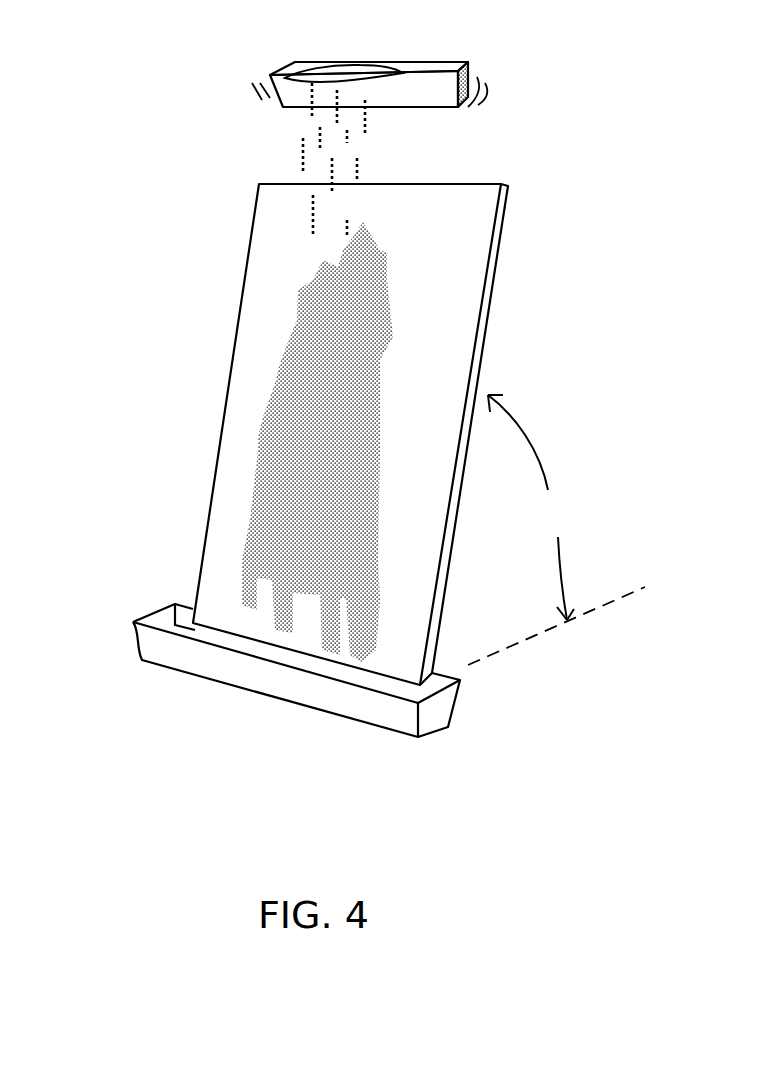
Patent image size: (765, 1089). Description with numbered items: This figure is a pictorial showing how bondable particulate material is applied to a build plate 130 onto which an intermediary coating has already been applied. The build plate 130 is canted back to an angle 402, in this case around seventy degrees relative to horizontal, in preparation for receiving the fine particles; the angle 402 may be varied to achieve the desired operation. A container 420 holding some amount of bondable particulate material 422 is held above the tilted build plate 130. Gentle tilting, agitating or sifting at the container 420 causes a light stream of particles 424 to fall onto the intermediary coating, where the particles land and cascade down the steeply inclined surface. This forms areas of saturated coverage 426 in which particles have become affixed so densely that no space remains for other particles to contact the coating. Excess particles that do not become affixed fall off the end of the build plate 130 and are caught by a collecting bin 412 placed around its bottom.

The build plate 130 is at (507, 208).
The angle 402 is at (556, 530).
The collecting bin 412 is at (134, 626).
The container 420 is at (478, 33).
The bondable particulate material 422 is at (317, 72).
The stream of particles 424 is at (268, 150).
The areas of saturated coverage 426 is at (308, 397).